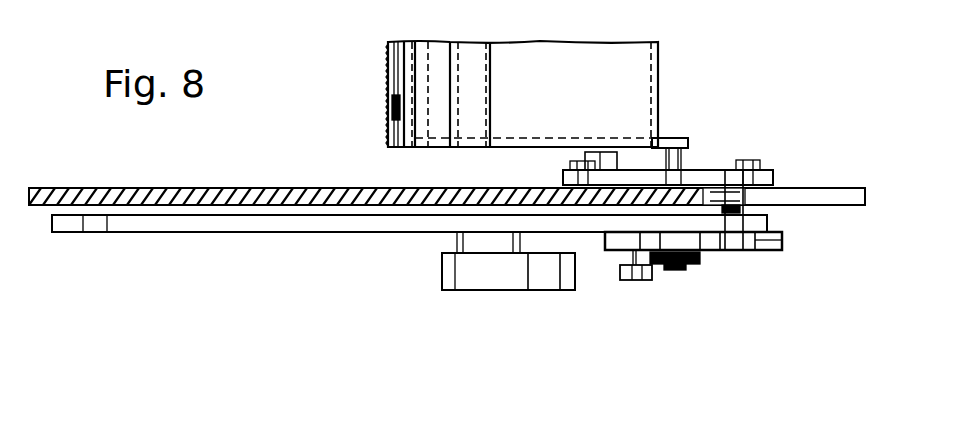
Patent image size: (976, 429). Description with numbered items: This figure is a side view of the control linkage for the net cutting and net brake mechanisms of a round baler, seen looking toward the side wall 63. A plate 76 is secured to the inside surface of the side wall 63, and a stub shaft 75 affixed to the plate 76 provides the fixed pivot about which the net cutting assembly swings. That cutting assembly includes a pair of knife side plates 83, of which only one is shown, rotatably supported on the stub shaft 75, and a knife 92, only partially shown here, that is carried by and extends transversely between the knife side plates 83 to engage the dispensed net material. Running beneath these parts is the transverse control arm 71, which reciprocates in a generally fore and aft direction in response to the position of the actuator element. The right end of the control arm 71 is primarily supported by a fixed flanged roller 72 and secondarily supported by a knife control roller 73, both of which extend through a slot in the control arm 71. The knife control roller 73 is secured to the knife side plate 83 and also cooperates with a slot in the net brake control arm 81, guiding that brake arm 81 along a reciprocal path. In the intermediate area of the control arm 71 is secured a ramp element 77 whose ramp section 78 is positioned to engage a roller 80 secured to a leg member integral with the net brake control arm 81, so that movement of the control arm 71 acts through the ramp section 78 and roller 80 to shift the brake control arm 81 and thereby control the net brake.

The side wall 63 is at (147, 186).
The control arm 71 is at (232, 224).
The fixed flanged roller 72 is at (745, 207).
The knife control roller 73 is at (680, 268).
The stub shaft 75 is at (585, 153).
The plate 76 is at (712, 170).
The ramp element 77 is at (480, 272).
The ramp section 78 is at (547, 268).
The roller 80 is at (620, 276).
The net brake control arm 81 is at (766, 251).
The knife side plate 83 is at (658, 140).
The knife 92 is at (388, 60).